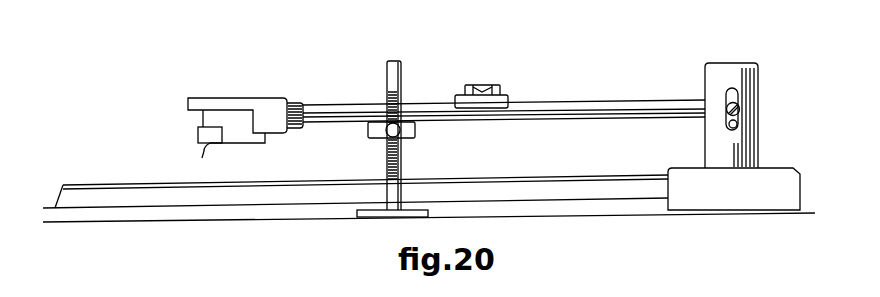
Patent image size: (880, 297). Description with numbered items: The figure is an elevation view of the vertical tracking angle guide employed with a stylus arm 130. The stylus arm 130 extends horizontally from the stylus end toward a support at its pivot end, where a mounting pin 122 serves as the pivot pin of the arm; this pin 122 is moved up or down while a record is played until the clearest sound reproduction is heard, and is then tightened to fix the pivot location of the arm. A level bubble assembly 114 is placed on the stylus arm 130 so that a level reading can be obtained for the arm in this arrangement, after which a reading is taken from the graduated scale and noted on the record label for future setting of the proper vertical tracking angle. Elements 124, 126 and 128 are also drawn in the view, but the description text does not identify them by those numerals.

The level bubble assembly 114 is at (508, 87).
The mounting pin 122 is at (740, 110).
The nut 124 is at (737, 125).
The upright support 126 is at (712, 82).
The rail 128 is at (552, 192).
The stylus arm 130 is at (603, 103).